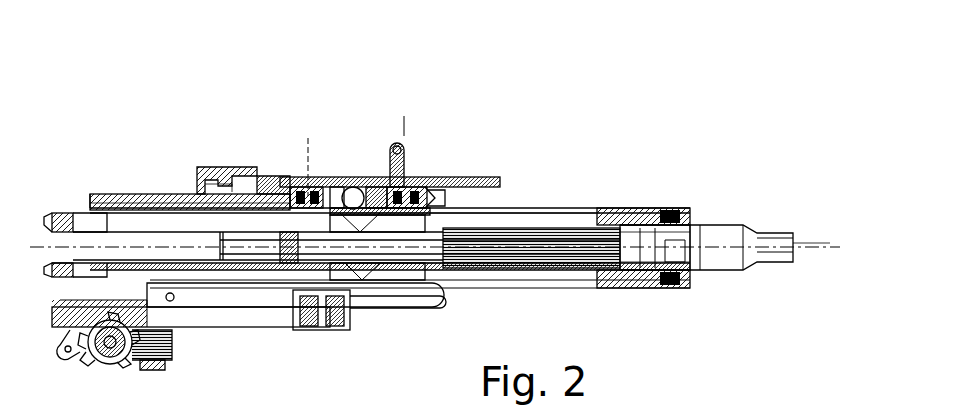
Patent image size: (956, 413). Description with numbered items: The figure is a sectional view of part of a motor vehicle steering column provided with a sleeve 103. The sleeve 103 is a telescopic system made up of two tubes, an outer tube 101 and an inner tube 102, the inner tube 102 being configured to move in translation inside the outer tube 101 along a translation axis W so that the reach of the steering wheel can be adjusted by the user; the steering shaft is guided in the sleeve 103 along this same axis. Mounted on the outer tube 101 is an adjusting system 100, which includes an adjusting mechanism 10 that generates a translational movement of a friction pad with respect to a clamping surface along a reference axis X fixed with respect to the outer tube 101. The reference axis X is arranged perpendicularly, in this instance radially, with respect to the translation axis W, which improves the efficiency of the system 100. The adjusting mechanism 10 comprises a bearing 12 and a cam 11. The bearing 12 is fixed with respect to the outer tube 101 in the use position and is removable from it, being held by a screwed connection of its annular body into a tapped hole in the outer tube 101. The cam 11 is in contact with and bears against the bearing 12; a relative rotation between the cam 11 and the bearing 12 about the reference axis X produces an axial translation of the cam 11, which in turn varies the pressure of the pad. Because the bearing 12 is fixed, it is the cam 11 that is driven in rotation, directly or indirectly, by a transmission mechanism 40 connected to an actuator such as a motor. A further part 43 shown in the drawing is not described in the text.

The adjusting mechanism 10 is at (318, 183).
The cam 11 is at (428, 198).
The bearing 12 is at (430, 187).
The transmission mechanism 40 is at (262, 170).
The pin 43 is at (372, 178).
The adjusting system 100 is at (386, 128).
The outer tube 101 is at (140, 194).
The inner tube 102 is at (590, 207).
The sleeve 103 is at (555, 115).
The reference axis X is at (308, 143).
The translation axis W is at (813, 243).